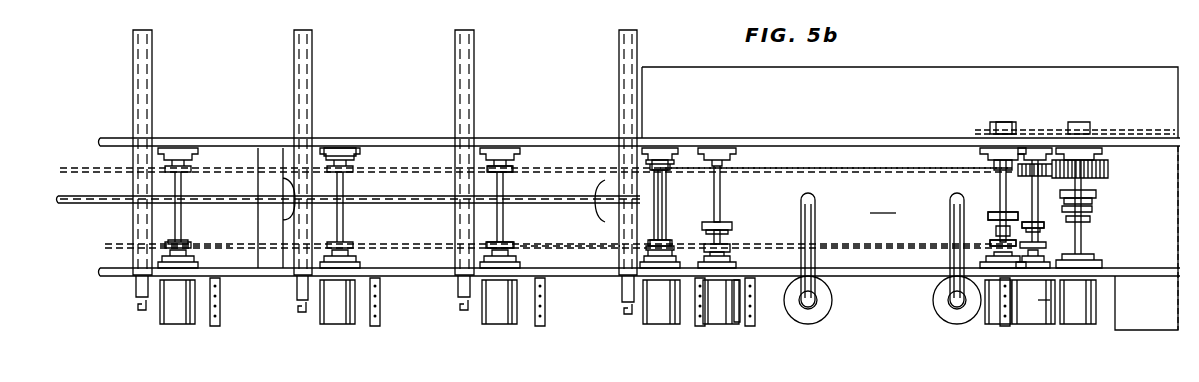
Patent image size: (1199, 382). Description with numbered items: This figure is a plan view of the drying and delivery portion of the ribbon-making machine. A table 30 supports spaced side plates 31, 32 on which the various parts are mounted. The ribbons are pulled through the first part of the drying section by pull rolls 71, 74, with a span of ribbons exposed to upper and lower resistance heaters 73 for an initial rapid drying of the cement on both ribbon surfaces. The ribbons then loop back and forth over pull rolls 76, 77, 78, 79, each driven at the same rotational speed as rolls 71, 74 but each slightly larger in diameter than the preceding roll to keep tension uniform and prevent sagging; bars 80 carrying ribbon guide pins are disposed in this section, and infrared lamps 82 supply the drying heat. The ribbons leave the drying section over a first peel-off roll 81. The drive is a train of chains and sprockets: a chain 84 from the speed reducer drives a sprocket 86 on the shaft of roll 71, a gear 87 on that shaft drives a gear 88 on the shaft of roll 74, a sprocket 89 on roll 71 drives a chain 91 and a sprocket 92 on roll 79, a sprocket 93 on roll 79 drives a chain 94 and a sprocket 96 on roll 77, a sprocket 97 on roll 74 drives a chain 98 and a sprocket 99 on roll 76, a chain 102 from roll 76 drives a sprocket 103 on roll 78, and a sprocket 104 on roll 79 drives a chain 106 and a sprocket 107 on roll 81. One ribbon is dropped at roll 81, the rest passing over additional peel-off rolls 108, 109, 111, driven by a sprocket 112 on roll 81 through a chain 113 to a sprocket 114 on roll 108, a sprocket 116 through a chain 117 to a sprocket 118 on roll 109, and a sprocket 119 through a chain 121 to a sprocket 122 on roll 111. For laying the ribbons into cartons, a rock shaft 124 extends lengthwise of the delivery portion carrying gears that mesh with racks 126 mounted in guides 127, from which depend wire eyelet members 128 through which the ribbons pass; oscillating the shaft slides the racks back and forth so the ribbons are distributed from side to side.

The table 30 is at (884, 203).
The side plate 31 is at (1164, 276).
The side plate 32 is at (1108, 148).
The pull roll 71 is at (1072, 328).
The resistance heater 73 is at (1142, 322).
The pull roll 74 is at (1046, 338).
The pull roll 76 is at (716, 324).
The pull roll 77 is at (1006, 326).
The pull roll 78 is at (714, 326).
The pull roll 79 is at (1038, 326).
The bar 80 is at (214, 328).
The first peel-off roll 81 is at (662, 326).
The infrared lamp 82 is at (824, 320).
The chain 84 is at (1167, 132).
The sprocket 86 is at (1070, 120).
The gear 87 is at (1106, 169).
The gear 88 is at (1094, 190).
The sprocket 89 is at (1088, 198).
The chain 91 is at (1082, 210).
The sprocket 92 is at (1074, 218).
The sprocket 93 is at (1036, 228).
The chain 94 is at (1008, 224).
The sprocket 96 is at (970, 226).
The sprocket 97 is at (1010, 252).
The chain 98 is at (898, 244).
The sprocket 99 is at (730, 254).
The chain 102 is at (730, 224).
The sprocket 103 is at (730, 234).
The sprocket 104 is at (1002, 170).
The chain 106 is at (884, 172).
The sprocket 107 is at (670, 166).
The peel-off roll 108 is at (496, 328).
The peel-off roll 109 is at (338, 326).
The peel-off roll 111 is at (181, 326).
The sprocket 112 is at (670, 240).
The chain 113 is at (608, 238).
The sprocket 114 is at (511, 245).
The sprocket 116 is at (510, 170).
The chain 117 is at (438, 174).
The sprocket 118 is at (345, 161).
The sprocket 119 is at (348, 248).
The chain 121 is at (242, 238).
The sprocket 122 is at (180, 248).
The rock shaft 124 is at (106, 202).
The rack 126 is at (300, 54).
The guide 127 is at (296, 44).
The wire eyelet member 128 is at (138, 307).